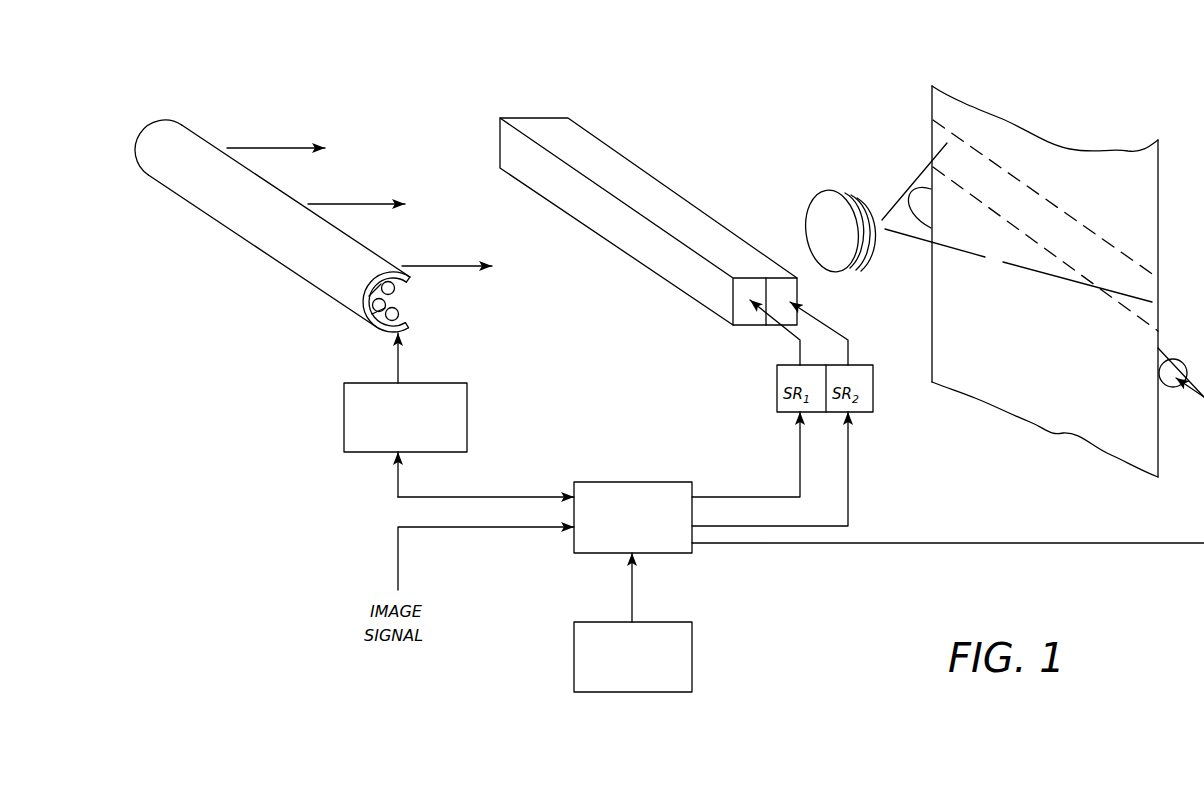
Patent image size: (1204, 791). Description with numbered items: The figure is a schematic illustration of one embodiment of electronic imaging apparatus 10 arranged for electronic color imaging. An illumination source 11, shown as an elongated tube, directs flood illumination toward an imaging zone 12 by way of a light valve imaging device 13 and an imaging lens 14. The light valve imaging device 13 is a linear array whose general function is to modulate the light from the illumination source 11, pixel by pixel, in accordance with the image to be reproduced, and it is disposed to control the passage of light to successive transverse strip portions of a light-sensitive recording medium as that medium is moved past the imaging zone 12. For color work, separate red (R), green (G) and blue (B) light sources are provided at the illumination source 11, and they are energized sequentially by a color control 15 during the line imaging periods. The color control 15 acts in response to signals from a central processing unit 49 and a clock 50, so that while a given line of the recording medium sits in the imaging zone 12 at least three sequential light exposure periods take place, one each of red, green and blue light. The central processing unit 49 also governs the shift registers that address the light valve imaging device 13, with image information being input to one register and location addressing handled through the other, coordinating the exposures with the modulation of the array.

The electronic imaging apparatus 10 is at (653, 92).
The illumination source 11 is at (313, 224).
The imaging zone 12 is at (927, 148).
The light valve imaging device 13 is at (642, 177).
The imaging lens 14 is at (823, 207).
The color control 15 is at (912, 181).
The central processing unit 49 is at (662, 484).
The clock 50 is at (664, 622).
The blue light source B is at (397, 290).
The green light source G is at (394, 300).
The red light source R is at (401, 318).